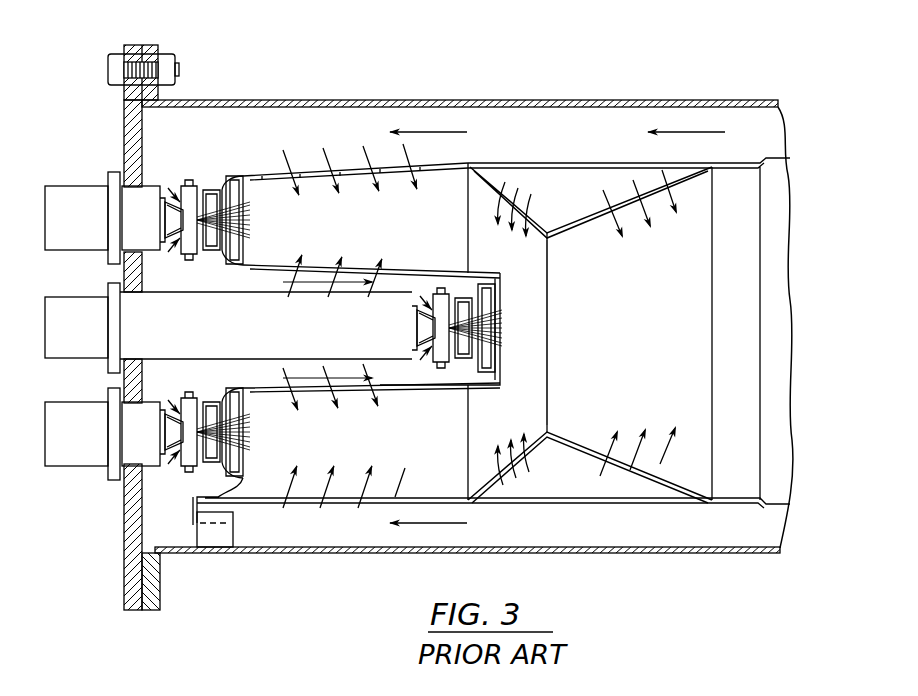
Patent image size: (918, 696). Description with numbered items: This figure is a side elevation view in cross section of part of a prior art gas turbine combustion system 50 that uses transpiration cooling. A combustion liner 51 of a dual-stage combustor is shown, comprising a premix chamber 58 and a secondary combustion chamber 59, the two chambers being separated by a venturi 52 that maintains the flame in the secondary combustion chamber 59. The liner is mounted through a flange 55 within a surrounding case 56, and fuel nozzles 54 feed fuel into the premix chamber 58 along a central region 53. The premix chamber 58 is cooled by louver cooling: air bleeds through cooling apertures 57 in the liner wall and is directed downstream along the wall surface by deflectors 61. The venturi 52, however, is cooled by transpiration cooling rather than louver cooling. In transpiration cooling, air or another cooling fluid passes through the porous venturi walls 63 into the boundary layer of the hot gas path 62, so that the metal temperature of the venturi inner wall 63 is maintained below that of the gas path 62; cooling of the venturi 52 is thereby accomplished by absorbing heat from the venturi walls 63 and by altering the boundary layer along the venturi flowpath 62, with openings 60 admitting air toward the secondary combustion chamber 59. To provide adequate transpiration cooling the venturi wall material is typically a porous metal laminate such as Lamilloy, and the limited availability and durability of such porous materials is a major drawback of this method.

The combustor 50 is at (560, 50).
The combustion liner 51 is at (290, 180).
The venturi 52 is at (584, 202).
The central zone 53 is at (574, 345).
The fuel injector 54 is at (86, 232).
The mounting flange 55 is at (124, 47).
The casing 56 is at (418, 96).
The cooling apertures 57 is at (308, 397).
The premix chamber 58 is at (414, 230).
The secondary combustion chamber 59 is at (694, 282).
The dilution air openings 60 is at (502, 425).
The deflectors 61 is at (424, 488).
The hot gas path 62 is at (586, 268).
The venturi walls 63 is at (548, 430).